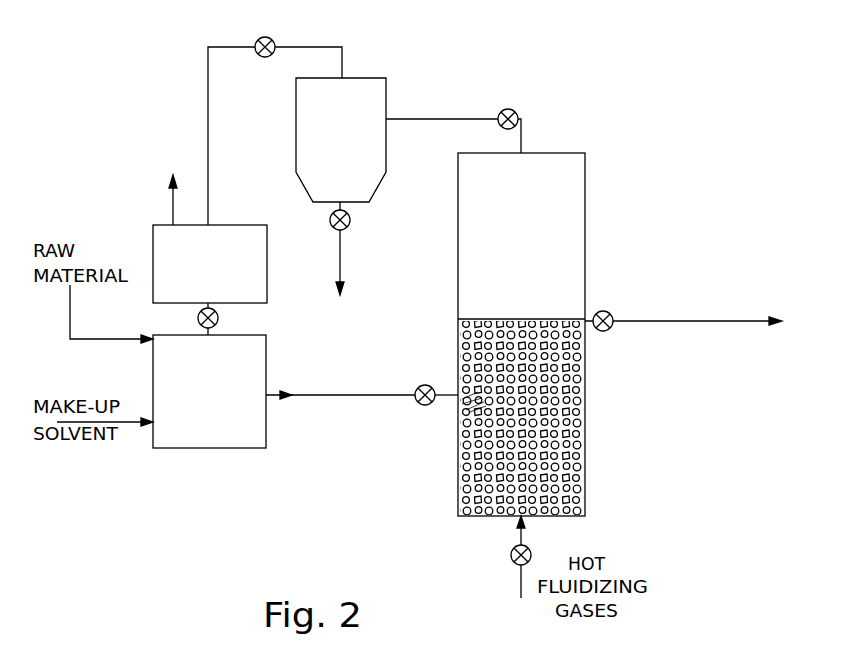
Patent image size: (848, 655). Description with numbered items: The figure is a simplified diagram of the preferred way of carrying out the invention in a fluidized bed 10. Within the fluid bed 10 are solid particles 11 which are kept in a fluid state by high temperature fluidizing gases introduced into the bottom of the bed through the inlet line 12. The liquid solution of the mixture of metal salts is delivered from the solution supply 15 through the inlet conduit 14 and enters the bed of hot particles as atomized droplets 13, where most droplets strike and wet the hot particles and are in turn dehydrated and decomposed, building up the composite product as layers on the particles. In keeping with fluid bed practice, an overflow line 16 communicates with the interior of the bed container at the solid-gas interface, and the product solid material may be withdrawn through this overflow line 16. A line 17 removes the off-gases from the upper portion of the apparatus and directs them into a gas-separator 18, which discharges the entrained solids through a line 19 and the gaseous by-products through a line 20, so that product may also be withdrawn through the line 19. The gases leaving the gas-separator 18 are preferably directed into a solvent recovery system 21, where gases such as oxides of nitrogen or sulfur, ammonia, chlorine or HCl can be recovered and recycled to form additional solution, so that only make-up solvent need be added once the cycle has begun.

The fluidized bed 10 is at (585, 177).
The solid particles 11 is at (562, 370).
The inlet line 12 is at (524, 539).
The atomized droplets 13 is at (462, 408).
The inlet conduit 14 is at (330, 397).
The solution supply 15 is at (163, 345).
The overflow line 16 is at (613, 315).
The line for removing off-gases 17 is at (522, 135).
The gas-separator 18 is at (378, 95).
The solids discharge line 19 is at (345, 240).
The gaseous by-products line 20 is at (275, 45).
The solvent recovery system 21 is at (158, 233).